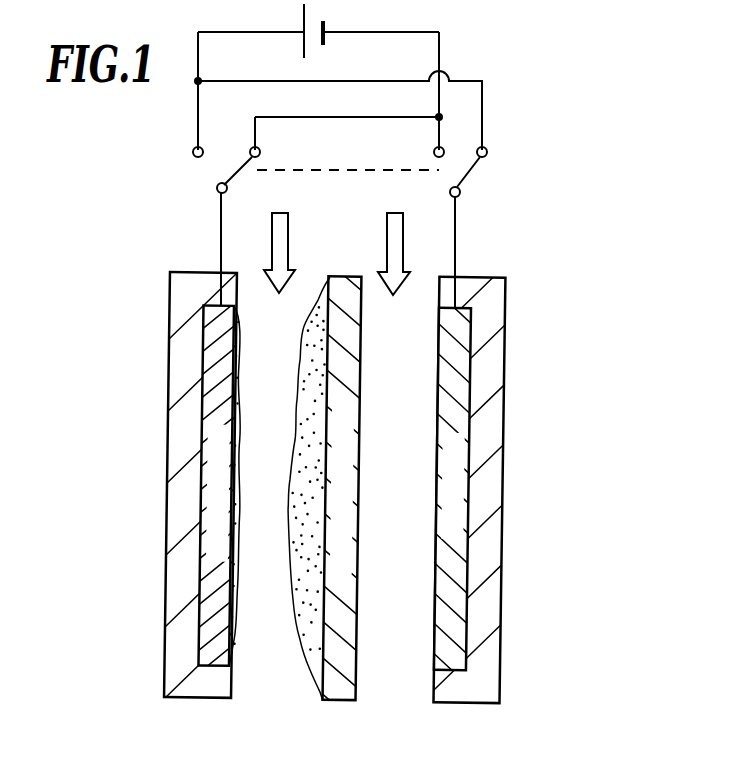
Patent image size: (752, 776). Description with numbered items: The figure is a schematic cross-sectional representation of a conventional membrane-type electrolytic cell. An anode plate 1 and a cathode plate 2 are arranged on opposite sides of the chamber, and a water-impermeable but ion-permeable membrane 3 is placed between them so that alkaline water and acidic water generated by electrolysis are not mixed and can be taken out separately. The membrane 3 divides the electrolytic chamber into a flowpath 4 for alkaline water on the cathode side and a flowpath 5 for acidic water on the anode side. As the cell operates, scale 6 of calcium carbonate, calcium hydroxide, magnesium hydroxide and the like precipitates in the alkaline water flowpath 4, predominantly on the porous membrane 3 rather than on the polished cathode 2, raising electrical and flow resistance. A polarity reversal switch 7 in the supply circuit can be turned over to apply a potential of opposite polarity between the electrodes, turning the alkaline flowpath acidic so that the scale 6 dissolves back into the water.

The anode plate 1 is at (452, 652).
The cathode plate 2 is at (213, 657).
The membrane 3 is at (339, 687).
The flowpath for alkaline water 4 is at (282, 350).
The flowpath for acidic water 5 is at (413, 412).
The scale 6 is at (303, 648).
The polarity reversal switch 7 is at (536, 147).